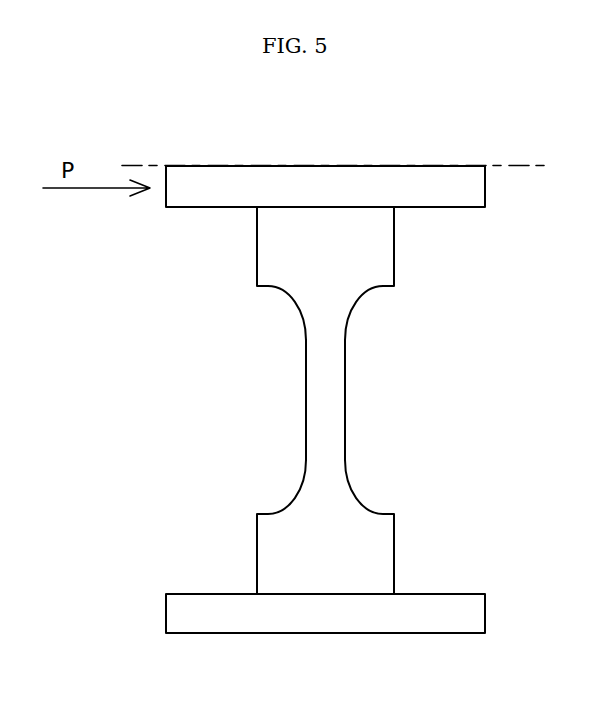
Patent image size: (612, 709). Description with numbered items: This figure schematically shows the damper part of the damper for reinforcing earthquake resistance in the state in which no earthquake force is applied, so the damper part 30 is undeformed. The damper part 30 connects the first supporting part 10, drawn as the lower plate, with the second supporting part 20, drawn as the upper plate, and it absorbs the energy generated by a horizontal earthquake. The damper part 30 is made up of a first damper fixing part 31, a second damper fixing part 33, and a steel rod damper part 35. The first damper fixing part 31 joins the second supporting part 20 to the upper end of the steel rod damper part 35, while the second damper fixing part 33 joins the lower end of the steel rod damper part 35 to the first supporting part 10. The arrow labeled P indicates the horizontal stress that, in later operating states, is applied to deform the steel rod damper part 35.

The first supporting part 10 is at (325, 623).
The second supporting part 20 is at (320, 181).
The damper part 30 is at (253, 400).
The first damper fixing part 31 is at (302, 270).
The second damper fixing part 33 is at (298, 527).
The steel rod damper part 35 is at (312, 402).